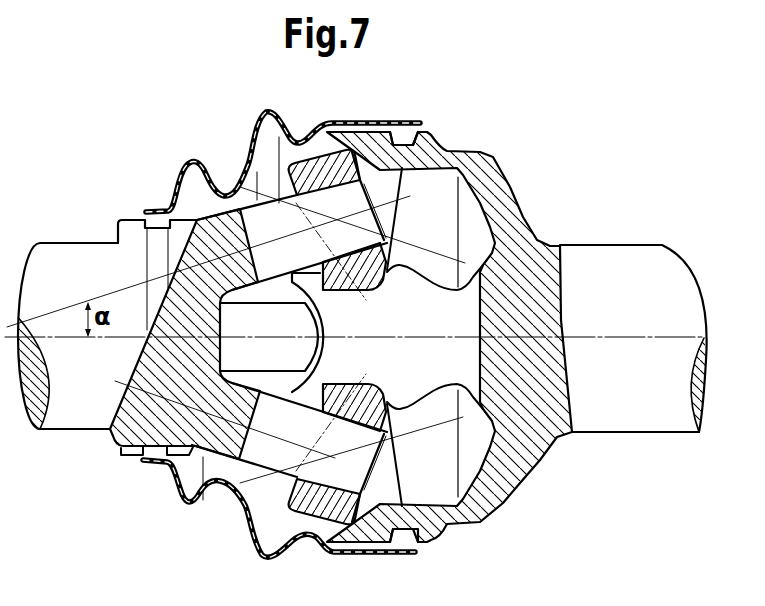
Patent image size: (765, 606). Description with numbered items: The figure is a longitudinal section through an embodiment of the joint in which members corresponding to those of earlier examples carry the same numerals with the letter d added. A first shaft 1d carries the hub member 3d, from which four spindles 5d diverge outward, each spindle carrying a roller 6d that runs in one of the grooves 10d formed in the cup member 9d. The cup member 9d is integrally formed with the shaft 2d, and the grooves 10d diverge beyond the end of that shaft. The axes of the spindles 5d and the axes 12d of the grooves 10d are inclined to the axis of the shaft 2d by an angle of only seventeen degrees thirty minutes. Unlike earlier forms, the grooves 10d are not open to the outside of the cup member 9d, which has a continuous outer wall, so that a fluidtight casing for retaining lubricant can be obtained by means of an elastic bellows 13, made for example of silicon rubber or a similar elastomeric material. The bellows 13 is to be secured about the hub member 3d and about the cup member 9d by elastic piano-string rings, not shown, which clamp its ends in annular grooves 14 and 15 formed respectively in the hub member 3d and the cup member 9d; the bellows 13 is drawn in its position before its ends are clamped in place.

The first shaft 1d is at (50, 258).
The shaft 2d is at (611, 434).
The hub member 3d is at (190, 432).
The spindles 5d is at (248, 230).
The roller 6d is at (311, 168).
The cup member 9d is at (445, 155).
The grooves 10d is at (393, 129).
The axes of the grooves 12d is at (422, 247).
The elastic bellows 13 is at (258, 120).
The annular groove 14 is at (140, 433).
The annular groove 15 is at (424, 540).